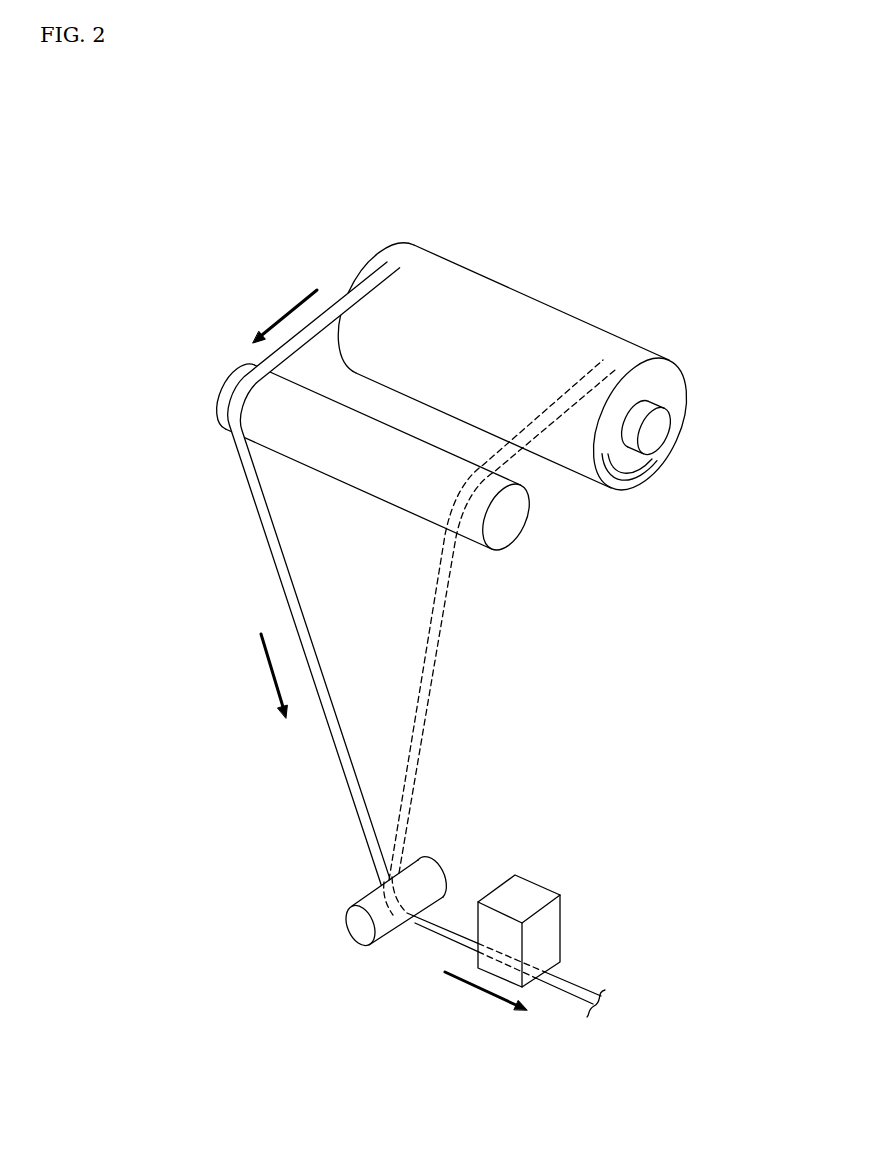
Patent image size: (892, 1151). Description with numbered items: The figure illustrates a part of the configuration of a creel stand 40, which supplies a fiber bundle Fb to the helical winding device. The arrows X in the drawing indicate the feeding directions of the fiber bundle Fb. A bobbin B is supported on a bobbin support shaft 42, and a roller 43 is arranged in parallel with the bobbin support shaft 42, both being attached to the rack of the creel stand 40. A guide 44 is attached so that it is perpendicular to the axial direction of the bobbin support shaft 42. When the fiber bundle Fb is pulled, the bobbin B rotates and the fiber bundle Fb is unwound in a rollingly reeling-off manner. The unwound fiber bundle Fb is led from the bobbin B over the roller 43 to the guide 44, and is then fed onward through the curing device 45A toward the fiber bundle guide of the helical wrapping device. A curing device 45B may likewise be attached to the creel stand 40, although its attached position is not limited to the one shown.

The creel stand 40 is at (246, 186).
The bobbin B is at (528, 303).
The bobbin support shaft 42 is at (664, 423).
The roller 43 is at (528, 508).
The guide 44 is at (423, 863).
The curing device 45A is at (533, 889).
The curing device 45B is at (519, 931).
The fiber bundle Fb is at (312, 649).